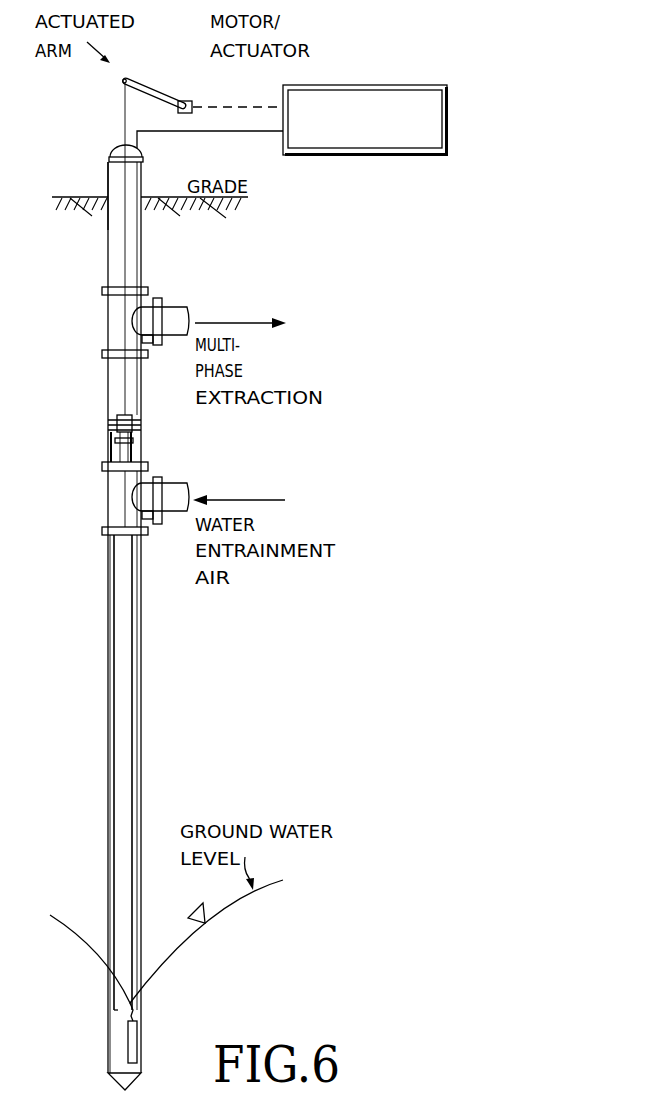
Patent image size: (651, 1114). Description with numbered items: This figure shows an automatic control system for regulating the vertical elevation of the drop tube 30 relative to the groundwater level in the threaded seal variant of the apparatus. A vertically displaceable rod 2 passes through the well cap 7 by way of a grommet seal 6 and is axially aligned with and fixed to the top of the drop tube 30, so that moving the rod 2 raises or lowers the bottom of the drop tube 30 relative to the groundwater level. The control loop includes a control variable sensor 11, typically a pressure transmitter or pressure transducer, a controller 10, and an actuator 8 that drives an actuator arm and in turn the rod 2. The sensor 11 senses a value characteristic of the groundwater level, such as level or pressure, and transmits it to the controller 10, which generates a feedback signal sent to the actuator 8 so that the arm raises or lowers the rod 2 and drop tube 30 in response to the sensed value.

The vertically displaceable rod 2 is at (125, 241).
The grommet seal 6 is at (112, 150).
The well cap 7 is at (110, 160).
The actuator 8 is at (156, 91).
The controller 10 is at (317, 158).
The sensor 11 is at (128, 1035).
The drop tube 30 is at (123, 989).